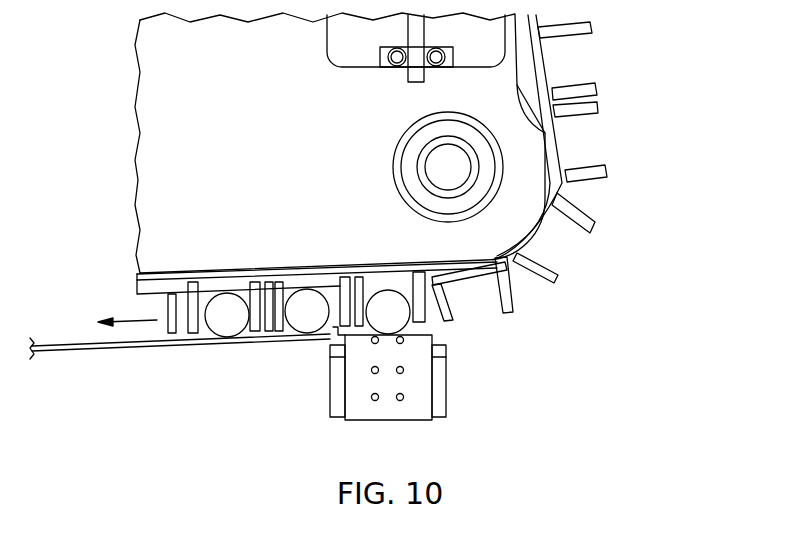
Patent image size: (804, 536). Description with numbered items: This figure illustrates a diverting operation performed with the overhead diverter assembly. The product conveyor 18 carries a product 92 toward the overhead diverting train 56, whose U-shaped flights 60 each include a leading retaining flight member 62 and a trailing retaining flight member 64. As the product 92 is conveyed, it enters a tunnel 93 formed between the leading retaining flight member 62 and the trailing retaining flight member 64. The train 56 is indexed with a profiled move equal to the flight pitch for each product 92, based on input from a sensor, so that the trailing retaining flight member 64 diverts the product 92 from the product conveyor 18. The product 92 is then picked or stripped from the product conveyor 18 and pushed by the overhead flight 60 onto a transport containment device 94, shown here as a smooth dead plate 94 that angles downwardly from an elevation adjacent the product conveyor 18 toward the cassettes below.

The product conveyor 18 is at (338, 431).
The train 56 is at (606, 203).
The flight 60 is at (296, 266).
The leading retaining flight member 62 is at (337, 323).
The trailing retaining flight member 64 is at (428, 310).
The product 92 is at (223, 293).
The tunnel 93 is at (373, 281).
The transport containment device 94 is at (110, 348).